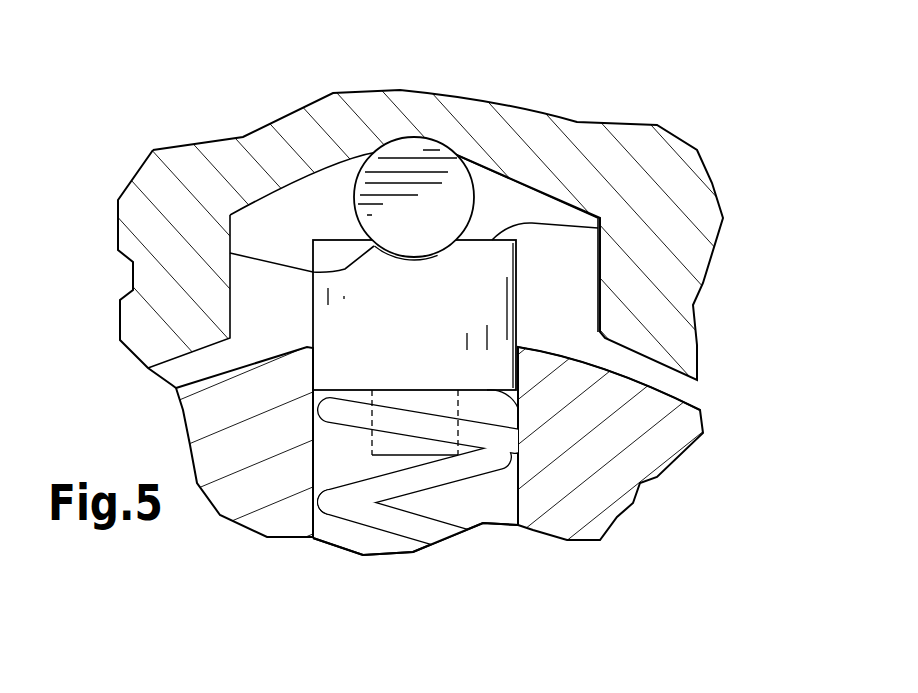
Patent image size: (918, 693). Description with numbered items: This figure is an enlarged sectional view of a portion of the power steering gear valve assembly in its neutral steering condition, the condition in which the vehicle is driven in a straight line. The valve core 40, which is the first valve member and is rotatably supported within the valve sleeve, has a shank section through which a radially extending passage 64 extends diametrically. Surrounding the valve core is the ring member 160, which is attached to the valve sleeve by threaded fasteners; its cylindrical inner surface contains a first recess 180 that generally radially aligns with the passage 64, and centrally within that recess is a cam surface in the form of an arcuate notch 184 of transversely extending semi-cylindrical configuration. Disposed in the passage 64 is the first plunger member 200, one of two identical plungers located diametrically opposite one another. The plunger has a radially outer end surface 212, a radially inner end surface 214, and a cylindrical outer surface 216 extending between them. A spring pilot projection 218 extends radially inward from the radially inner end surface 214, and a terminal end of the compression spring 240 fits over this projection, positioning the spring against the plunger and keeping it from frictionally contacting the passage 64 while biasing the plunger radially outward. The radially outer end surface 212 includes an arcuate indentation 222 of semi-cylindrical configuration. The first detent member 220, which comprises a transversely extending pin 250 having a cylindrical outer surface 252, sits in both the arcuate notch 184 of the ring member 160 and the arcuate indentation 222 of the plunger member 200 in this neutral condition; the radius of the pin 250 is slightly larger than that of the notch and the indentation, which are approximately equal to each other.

The valve core 40 is at (587, 503).
The radially extending passage 64 is at (508, 514).
The ring member 160 is at (373, 118).
The first recess 180 is at (545, 210).
The arcuate notch 184 is at (432, 133).
The first plunger member 200 is at (515, 298).
The radially outer end surface 212 is at (600, 226).
The radially inner end surface 214 is at (512, 412).
The cylindrical outer surface 216 is at (517, 322).
The spring pilot projection 218 is at (500, 430).
The first detent member 220 is at (460, 207).
The arcuate indentation 222 is at (230, 253).
The compression spring 240 is at (382, 513).
The pin 250 is at (362, 203).
The cylindrical outer surface 252 is at (357, 180).